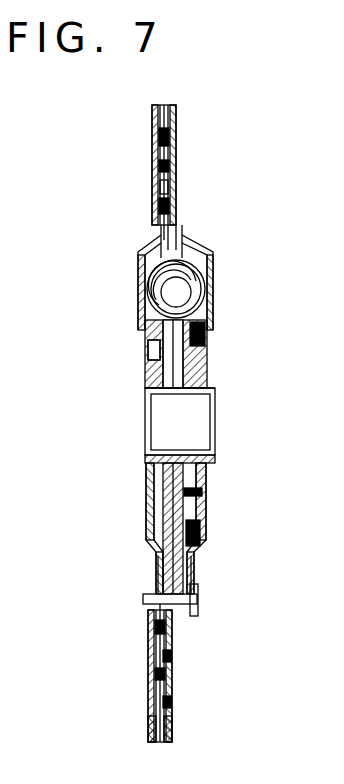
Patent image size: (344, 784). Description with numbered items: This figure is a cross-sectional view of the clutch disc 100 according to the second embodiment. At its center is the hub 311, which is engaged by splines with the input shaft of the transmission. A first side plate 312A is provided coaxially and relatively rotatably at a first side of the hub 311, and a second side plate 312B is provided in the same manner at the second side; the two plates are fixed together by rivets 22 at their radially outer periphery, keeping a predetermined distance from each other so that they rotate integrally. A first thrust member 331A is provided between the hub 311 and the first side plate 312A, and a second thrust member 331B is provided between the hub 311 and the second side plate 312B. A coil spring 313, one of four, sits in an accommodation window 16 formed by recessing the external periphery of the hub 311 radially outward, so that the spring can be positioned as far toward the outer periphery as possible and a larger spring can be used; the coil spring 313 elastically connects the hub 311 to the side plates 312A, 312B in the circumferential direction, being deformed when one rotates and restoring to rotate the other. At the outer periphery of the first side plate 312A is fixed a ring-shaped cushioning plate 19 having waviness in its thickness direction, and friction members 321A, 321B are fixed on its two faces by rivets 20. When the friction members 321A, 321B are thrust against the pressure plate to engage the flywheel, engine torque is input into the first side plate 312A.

The clutch disc 100 is at (190, 148).
The accommodation window 16 is at (178, 246).
The coil spring 313 is at (150, 274).
The hub 311 is at (158, 335).
The first thrust member 331A is at (150, 474).
The second thrust member 331B is at (206, 493).
The first side plate 312A is at (158, 564).
The second side plate 312B is at (198, 572).
The rivet 22 is at (198, 600).
The rivet 20 is at (172, 656).
The cushioning plate 19 is at (152, 738).
The friction member 321A is at (150, 722).
The friction member 321B is at (172, 728).